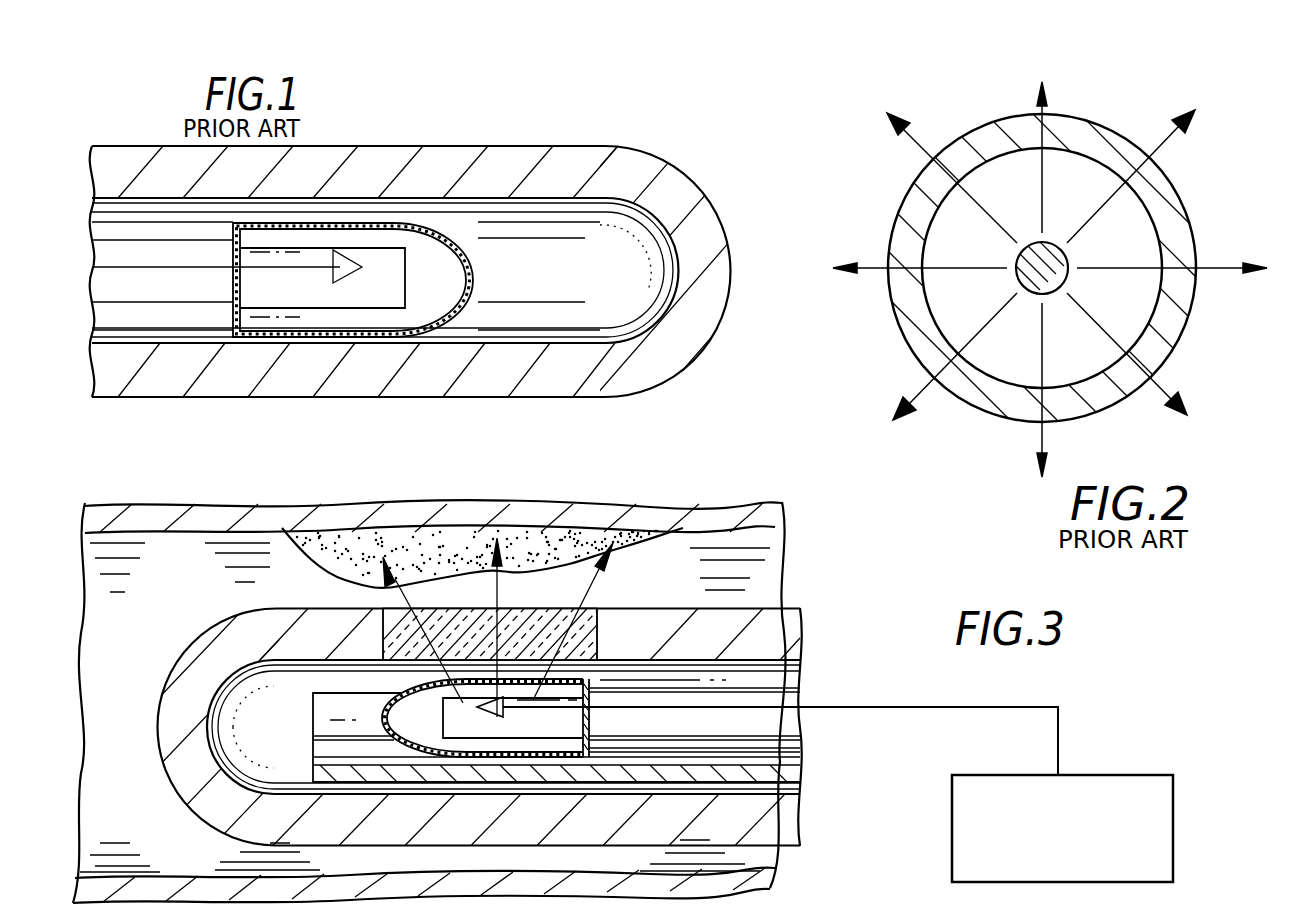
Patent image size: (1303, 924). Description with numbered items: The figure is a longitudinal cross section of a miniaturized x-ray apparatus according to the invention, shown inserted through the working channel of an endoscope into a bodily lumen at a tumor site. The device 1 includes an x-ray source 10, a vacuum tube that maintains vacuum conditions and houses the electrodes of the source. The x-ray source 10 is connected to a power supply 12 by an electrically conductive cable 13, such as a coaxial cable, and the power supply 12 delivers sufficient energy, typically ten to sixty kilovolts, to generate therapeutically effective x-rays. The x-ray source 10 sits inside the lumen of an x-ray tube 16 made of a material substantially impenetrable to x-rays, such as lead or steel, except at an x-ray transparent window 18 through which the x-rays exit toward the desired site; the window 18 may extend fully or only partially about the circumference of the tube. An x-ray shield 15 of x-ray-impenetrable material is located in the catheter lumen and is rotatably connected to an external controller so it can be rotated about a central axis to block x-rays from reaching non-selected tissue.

The device 1 is at (732, 612).
The x-ray source 10 is at (507, 747).
The power supply 12 is at (1173, 826).
The electrically conductive cable 13 is at (790, 704).
The x-ray shield 15 is at (353, 747).
The x-ray tube 16 is at (656, 806).
The x-ray transparent window 18 is at (555, 608).